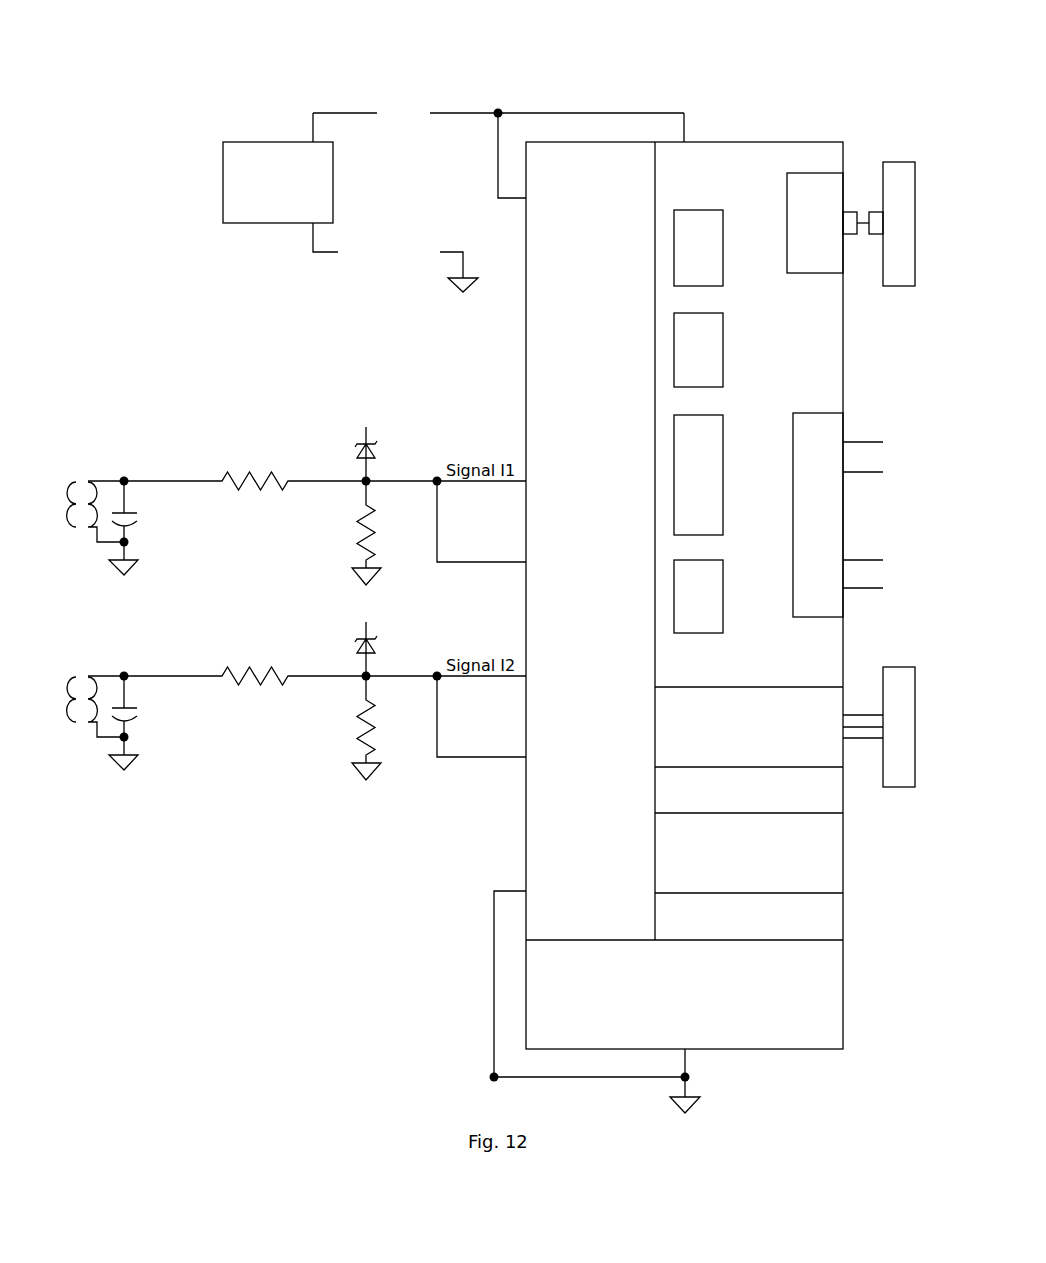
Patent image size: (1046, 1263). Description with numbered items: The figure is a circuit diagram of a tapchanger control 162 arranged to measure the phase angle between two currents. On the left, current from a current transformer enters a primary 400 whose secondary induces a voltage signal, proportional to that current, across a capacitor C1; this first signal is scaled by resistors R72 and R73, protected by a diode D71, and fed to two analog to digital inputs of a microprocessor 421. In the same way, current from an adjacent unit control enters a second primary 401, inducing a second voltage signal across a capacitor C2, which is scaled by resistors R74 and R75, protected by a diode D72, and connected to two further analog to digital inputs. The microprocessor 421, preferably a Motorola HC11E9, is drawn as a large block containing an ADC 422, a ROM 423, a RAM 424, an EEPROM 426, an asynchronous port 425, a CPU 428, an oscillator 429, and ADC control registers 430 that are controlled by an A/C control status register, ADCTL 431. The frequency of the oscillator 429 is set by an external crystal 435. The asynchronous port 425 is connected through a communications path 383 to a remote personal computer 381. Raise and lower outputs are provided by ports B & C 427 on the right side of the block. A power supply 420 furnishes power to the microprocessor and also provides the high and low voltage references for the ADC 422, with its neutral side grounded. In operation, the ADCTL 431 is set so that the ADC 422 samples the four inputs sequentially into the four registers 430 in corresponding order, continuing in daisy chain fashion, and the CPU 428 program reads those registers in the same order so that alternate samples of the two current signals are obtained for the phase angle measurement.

The tapchanger control 162 is at (487, 47).
The supply 420 is at (271, 141).
The microprocessor 421 is at (733, 141).
The ADC 422 is at (660, 191).
The ROM 423 is at (728, 250).
The RAM 424 is at (728, 350).
The asynchronous port 425 is at (812, 277).
The EEPROM 426 is at (728, 452).
The ports B & C 427 is at (812, 411).
The CPU 428 is at (728, 598).
The oscillator 429 is at (749, 685).
The ADC control registers 430 is at (727, 810).
The A/C control status register (ADCTL) 431 is at (748, 945).
The remote personal computer 381 is at (924, 171).
The communications path 383 is at (863, 210).
The crystal 435 is at (893, 791).
The primary 400 is at (68, 481).
The primary 401 is at (68, 676).
The capacitor C1 is at (128, 510).
The capacitor C2 is at (128, 705).
The resistor R72 is at (270, 470).
The resistor R73 is at (372, 516).
The resistor R74 is at (270, 665).
The resistor R75 is at (372, 711).
The diode D71 is at (374, 440).
The diode D72 is at (374, 635).